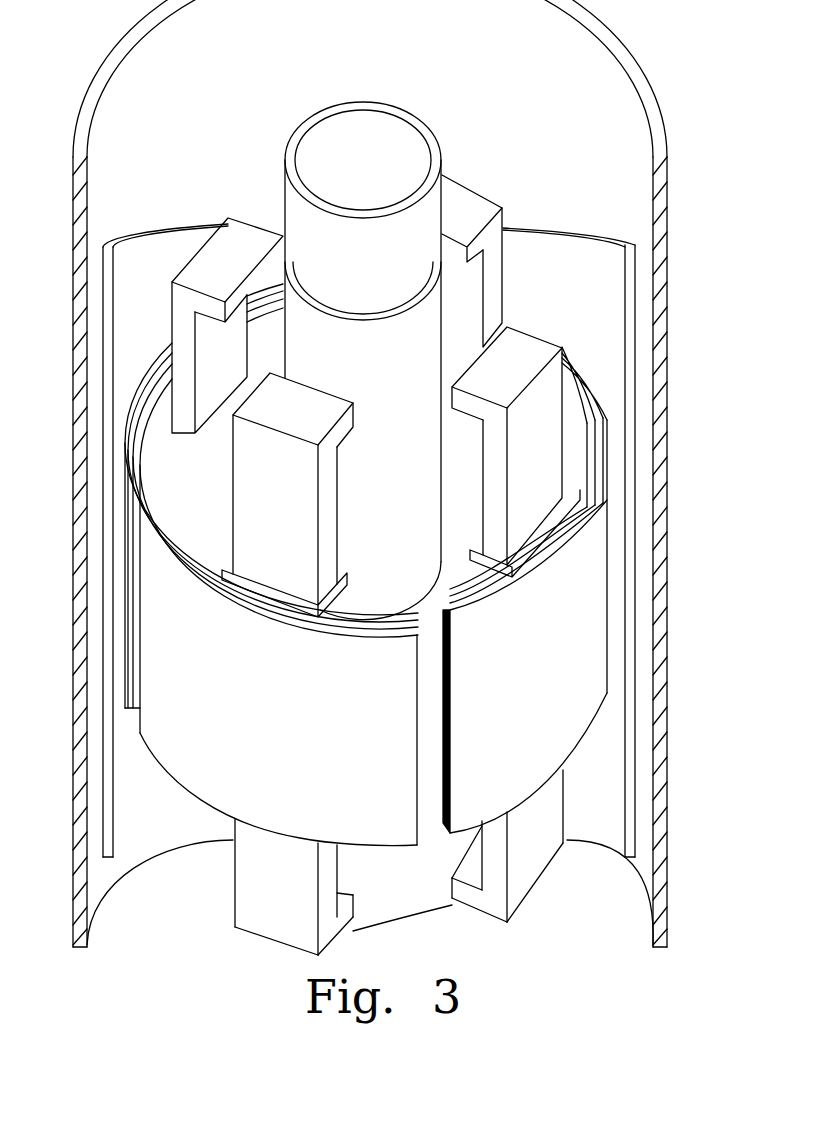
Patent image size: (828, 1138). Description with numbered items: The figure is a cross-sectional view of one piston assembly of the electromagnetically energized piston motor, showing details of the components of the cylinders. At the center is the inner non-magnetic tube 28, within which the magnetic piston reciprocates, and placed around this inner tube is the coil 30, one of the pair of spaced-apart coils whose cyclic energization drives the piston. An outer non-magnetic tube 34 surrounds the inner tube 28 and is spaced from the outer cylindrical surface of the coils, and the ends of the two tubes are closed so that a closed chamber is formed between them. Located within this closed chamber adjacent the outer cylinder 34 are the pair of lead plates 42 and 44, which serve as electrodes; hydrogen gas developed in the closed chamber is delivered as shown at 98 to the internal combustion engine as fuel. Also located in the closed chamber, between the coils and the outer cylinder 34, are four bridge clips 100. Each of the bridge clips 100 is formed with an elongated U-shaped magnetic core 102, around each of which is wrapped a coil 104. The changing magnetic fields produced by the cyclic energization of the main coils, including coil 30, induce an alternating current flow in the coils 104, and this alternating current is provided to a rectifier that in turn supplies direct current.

The inner non-magnetic tube 28 is at (418, 127).
The coil 30 is at (425, 334).
The outer non-magnetic tube 34 is at (660, 372).
The lead plate 42 is at (125, 840).
The lead plate 44 is at (608, 838).
The hydrogen gas delivery 98 is at (175, 337).
The bridge clip 100 is at (373, 367).
The elongated u-shaped magnetic core 102 is at (206, 268).
The coil 104 is at (222, 498).